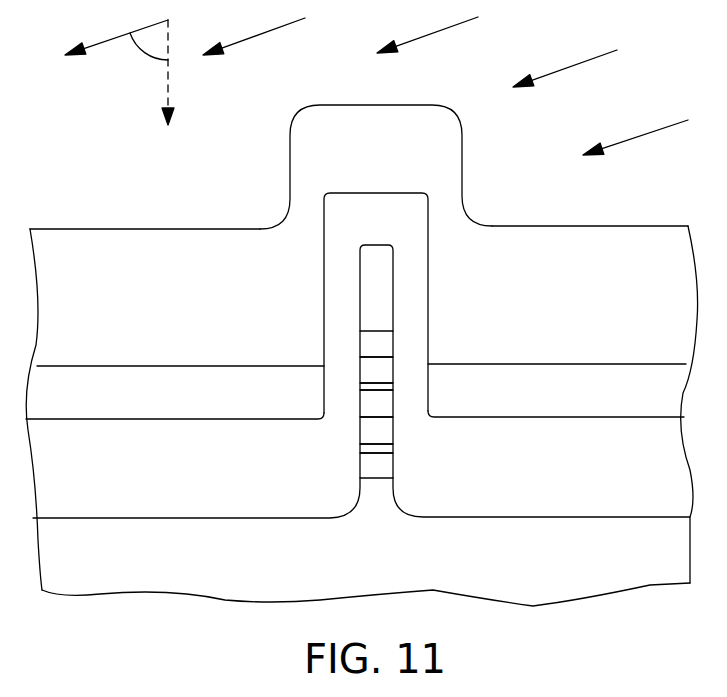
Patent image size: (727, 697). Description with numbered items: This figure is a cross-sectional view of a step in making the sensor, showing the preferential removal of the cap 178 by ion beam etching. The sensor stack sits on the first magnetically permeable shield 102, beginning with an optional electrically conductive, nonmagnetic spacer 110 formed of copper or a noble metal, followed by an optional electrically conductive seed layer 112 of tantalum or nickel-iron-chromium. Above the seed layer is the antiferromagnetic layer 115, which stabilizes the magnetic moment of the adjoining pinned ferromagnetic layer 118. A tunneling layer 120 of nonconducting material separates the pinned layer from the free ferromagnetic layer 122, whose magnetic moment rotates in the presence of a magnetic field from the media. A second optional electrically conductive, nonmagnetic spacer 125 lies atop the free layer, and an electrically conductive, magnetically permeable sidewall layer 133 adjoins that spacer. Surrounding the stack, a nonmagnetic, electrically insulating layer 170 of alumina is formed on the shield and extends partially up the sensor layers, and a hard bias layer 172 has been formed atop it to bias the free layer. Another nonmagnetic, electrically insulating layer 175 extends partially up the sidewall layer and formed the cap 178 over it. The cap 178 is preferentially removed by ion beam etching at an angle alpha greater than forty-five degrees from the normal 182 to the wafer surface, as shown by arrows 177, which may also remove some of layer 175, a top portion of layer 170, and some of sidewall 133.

The first magnetically permeable shield 102 is at (359, 579).
The electrically conductive nonmagnetic spacer 110 is at (393, 470).
The electrically conductive seed layer 112 is at (360, 447).
The antiferromagnetic layer 115 is at (393, 430).
The pinned ferromagnetic layer 118 is at (360, 400).
The tunneling layer 120 is at (393, 391).
The free ferromagnetic layer 122 is at (360, 368).
The second electrically conductive nonmagnetic spacer 125 is at (393, 345).
The electrically conductive sidewall layer 133 is at (360, 284).
The nonmagnetic electrically insulating layer 170 is at (136, 485).
The hard bias layer 172 is at (564, 401).
The nonmagnetic electrically insulating layer 175 is at (133, 328).
The arrows 177 is at (633, 140).
The cap 178 is at (295, 159).
The normal 182 is at (171, 84).